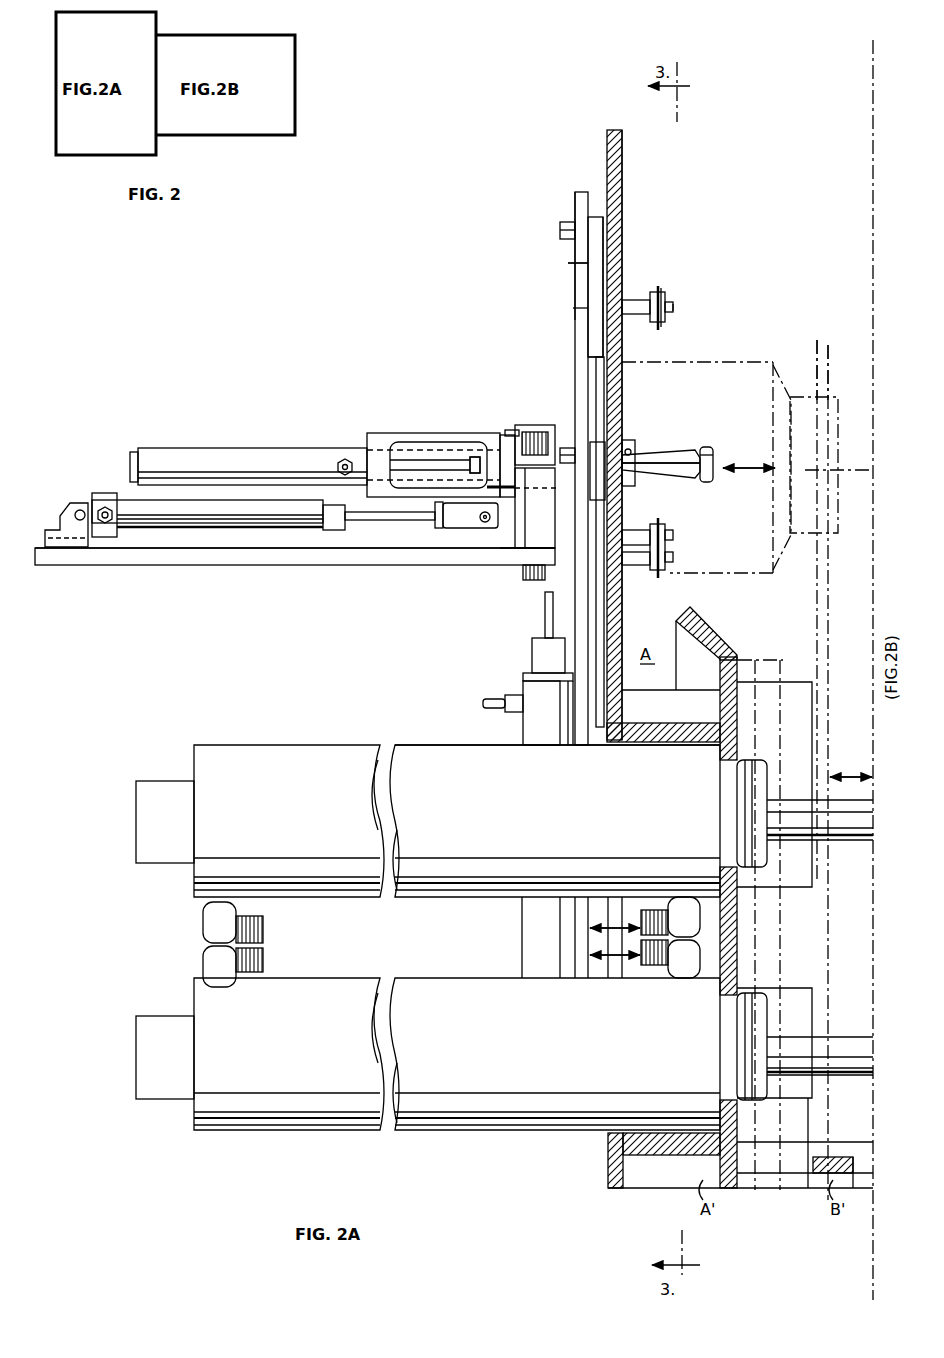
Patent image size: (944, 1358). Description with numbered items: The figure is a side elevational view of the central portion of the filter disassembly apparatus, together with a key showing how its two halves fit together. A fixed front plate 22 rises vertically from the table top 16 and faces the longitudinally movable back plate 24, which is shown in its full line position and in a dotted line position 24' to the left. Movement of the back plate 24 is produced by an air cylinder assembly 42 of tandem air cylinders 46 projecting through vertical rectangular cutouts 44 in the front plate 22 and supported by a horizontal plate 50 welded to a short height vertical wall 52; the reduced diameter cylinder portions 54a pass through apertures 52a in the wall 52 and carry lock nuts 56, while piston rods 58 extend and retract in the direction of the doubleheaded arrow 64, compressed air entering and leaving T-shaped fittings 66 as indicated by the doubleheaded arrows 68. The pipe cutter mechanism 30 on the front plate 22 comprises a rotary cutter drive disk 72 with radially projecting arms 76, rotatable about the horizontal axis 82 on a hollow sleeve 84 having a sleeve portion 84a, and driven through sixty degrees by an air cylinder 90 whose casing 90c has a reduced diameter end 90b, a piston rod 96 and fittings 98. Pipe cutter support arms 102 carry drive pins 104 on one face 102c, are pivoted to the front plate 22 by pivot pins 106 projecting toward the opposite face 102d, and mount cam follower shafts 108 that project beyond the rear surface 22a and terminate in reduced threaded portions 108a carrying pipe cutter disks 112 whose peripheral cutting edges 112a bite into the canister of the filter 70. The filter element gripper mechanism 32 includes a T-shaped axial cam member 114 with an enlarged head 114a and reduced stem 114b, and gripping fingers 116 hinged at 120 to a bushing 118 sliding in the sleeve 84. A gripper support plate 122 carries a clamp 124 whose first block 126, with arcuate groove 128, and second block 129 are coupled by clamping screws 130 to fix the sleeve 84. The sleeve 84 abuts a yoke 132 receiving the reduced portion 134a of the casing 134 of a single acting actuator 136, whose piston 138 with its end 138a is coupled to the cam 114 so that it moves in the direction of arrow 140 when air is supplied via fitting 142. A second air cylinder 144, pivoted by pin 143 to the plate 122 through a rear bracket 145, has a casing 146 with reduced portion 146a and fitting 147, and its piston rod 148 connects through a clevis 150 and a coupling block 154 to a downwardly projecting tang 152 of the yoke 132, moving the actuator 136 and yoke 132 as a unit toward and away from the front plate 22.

The table top 16 is at (668, 1185).
The fixed front plate 22 is at (612, 128).
The rear surface of fixed front plate 22a is at (644, 435).
The movable back plate 24 is at (806, 356).
The dotted line position of back plate 24' is at (845, 366).
The pipe cutter mechanism 30 is at (566, 318).
The filter element gripper mechanism 32 is at (675, 440).
The air cylinder assembly 42 is at (365, 742).
The vertical rectangular cutouts 44 is at (630, 733).
The tandem air cylinders 46 is at (330, 885).
The horizontal plate 50 is at (660, 742).
The short height vertical wall 52 is at (732, 710).
The wall aperture 52a is at (706, 624).
The reduced diameter cylinder portions 54a is at (772, 763).
The lock nuts 56 is at (748, 813).
The air cylinder piston rods 58 is at (862, 840).
The doubleheaded arrow 64 is at (862, 774).
The T-shaped inlet and outlet fittings 66 is at (205, 926).
The doubleheaded arrows 68 is at (596, 930).
The filter 70 is at (700, 360).
The rotary cutter drive disk 72 is at (573, 190).
The radially outwardly projecting arms 76 is at (590, 183).
The horizontal axis 82 is at (830, 467).
The hollow cylindrical sleeve 84 is at (505, 436).
The bracket portion 84a is at (490, 432).
The air cylinder 90 is at (523, 676).
The reduced diameter end of air cylinder 90b is at (530, 655).
The air cylinder casing 90c is at (530, 731).
The piston rod 96 is at (548, 615).
The fittings 98 is at (486, 706).
The pipe cutter support arms 102 is at (598, 235).
The face of support arm 102c is at (571, 263).
The opposite face of support arm 102d is at (606, 262).
The pipe cutter support drive pin 104 is at (565, 224).
The pivot pin 106 is at (604, 352).
The pipe cutter mounting shafts 108 is at (626, 303).
The reduced diameter threaded end portions 108a is at (675, 312).
The pipe cutter disks 112 is at (692, 299).
The peripheral cutting edge 112a is at (665, 291).
The axial cam member 114 is at (662, 313).
The radially enlarged head 114a is at (712, 462).
The reduced diameter stem 114b is at (673, 472).
The filter element gripping fingers 116 is at (653, 483).
The housing or bushing 118 is at (632, 445).
The hinges 120 is at (628, 448).
The gripper mechanism support plate 122 is at (176, 565).
The clamp 124 is at (508, 540).
The first block 126 is at (549, 541).
The arcuate concave groove 128 is at (606, 495).
The second block 129 is at (562, 446).
The clamping screws 130 is at (536, 432).
The open yoke or adapter 132 is at (370, 433).
The cylindrical casing 134 is at (230, 450).
The reduced diameter portion of casing 134a is at (378, 450).
The single acting linear actuator 136 is at (155, 446).
The piston 138 is at (425, 460).
The rod end 138a is at (468, 482).
The doubleheaded arrow 140 is at (746, 470).
The fitting 142 is at (341, 465).
The pin 143 is at (78, 508).
The single acting air cylinder 144 is at (134, 555).
The rear bracket 145 is at (64, 517).
The cylindrical casing 146 is at (290, 530).
The reduced diameter portion of casing 146a is at (337, 532).
The fitting 147 is at (113, 493).
The piston rod 148 is at (394, 522).
The clevis 150 is at (460, 528).
The tang 152 is at (537, 501).
The block 154 is at (490, 521).